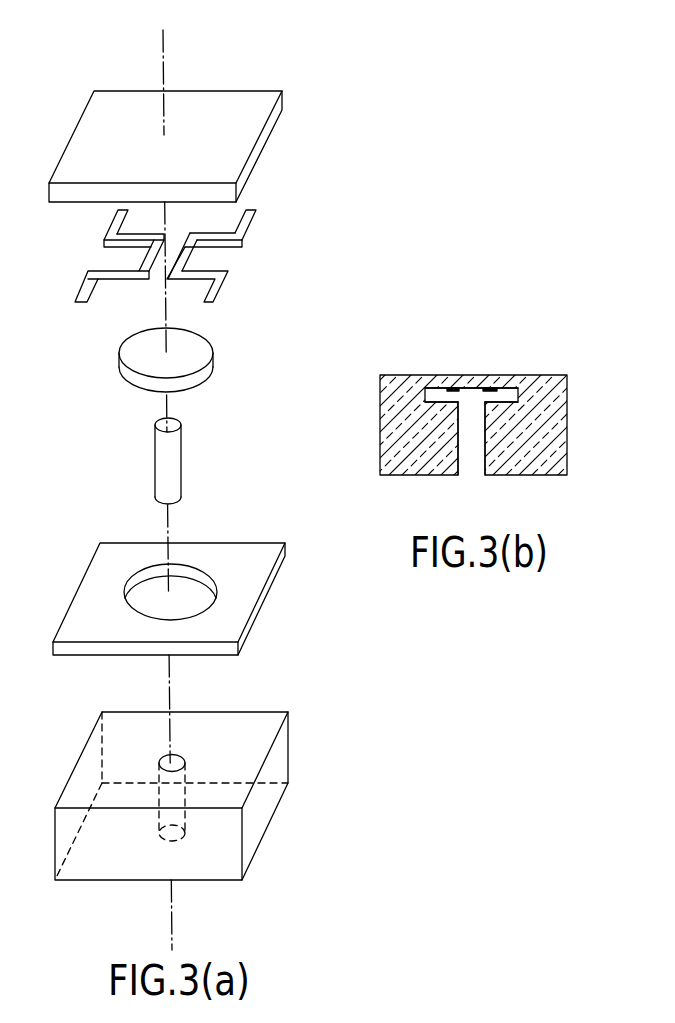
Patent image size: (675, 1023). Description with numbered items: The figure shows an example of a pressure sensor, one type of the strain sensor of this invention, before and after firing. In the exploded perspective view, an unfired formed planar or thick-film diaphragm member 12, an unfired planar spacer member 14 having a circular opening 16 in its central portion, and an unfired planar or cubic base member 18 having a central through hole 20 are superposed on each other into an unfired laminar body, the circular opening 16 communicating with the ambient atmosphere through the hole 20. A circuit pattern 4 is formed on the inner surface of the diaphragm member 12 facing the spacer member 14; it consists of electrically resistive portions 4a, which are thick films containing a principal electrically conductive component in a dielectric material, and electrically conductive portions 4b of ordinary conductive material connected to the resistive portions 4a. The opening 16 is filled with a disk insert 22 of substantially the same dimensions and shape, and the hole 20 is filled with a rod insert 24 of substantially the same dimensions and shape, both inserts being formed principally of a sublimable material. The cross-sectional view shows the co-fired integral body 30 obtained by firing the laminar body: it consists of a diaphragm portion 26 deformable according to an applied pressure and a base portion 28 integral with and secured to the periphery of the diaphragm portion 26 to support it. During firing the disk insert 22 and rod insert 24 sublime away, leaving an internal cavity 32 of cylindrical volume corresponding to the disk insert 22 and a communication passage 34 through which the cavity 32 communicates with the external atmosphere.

In FIG. 3A, the diaphragm member 12 is at (83, 132).
In FIG. 3A, the spacer member 14 is at (157, 581).
In FIG. 3A, the circular opening 16 is at (190, 590).
In FIG. 3A, the base member 18 is at (156, 777).
In FIG. 3A, the through hole 20 is at (175, 763).
In FIG. 3A, the disk insert 22 is at (200, 350).
In FIG. 3A, the rod insert 24 is at (177, 467).
In FIG. 3A, the circuit pattern 4 is at (193, 256).
In FIG. 3A, the electrically resistive portions 4a is at (143, 258).
In FIG. 3B, the electrically resistive portions 4a is at (453, 388).
In FIG. 3A, the electrically conductive portions 4b is at (109, 228).
In FIG. 3B, the diaphragm portion 26 is at (478, 377).
In FIG. 3B, the base portion 28 is at (563, 455).
In FIG. 3B, the co-fired integral body 30 is at (471, 421).
In FIG. 3B, the internal cavity 32 is at (430, 397).
In FIG. 3B, the communication passage 34 is at (482, 457).